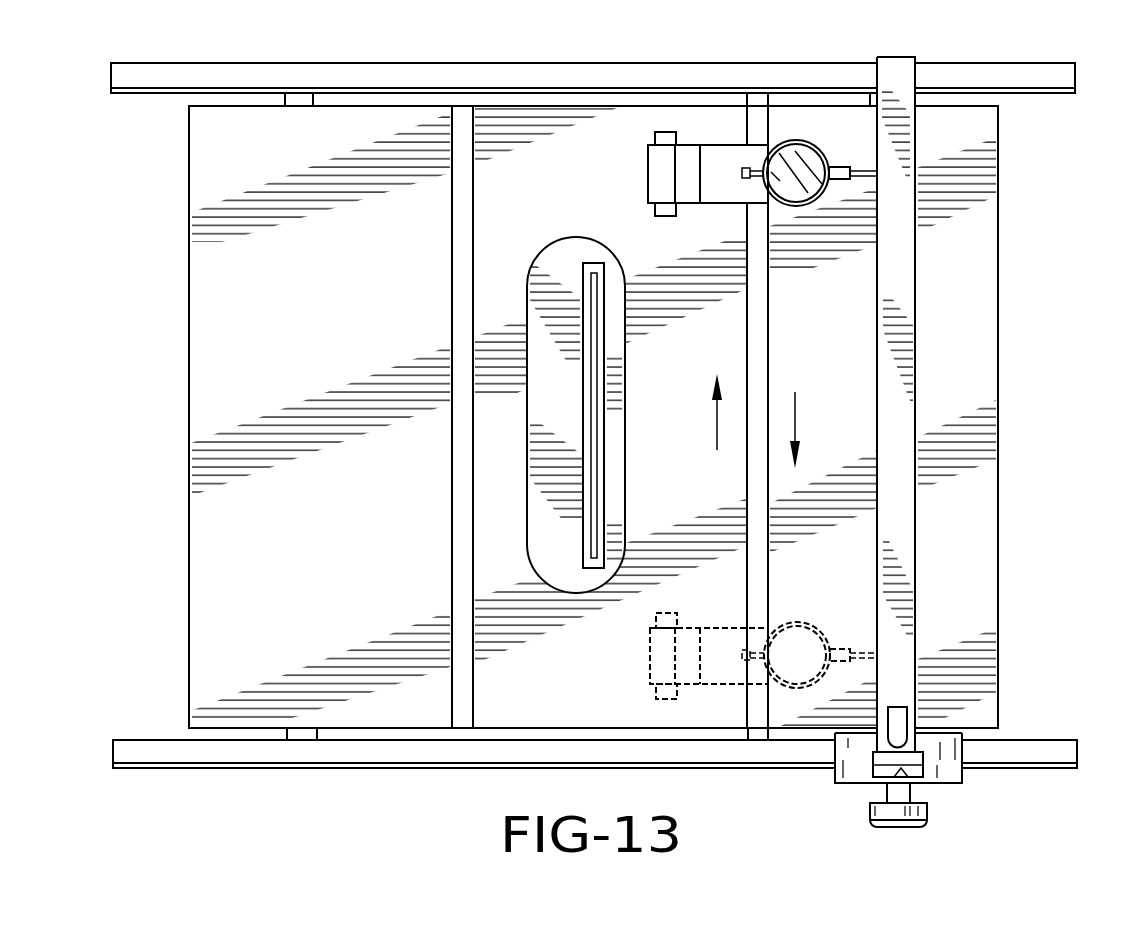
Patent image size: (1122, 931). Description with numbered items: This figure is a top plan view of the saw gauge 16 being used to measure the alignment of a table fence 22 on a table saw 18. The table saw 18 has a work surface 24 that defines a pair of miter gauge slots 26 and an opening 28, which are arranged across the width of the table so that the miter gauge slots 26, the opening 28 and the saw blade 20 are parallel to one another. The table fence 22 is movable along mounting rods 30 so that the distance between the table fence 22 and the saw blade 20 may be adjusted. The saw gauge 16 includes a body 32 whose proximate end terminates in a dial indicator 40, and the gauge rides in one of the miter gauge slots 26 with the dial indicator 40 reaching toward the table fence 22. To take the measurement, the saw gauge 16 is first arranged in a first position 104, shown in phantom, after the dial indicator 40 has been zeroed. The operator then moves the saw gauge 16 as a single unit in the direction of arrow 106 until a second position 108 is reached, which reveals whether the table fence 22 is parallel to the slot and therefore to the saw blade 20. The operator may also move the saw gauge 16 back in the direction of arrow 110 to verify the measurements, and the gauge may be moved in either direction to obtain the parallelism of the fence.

The saw gauge 16 is at (706, 117).
The table saw 18 is at (586, 410).
The saw blade 20 is at (609, 457).
The table fence 22 is at (900, 546).
The work surface 24 is at (968, 267).
The miter gauge slots 26 is at (758, 344).
The opening 28 is at (586, 566).
The mounting rods 30 is at (1032, 72).
The body 32 is at (708, 138).
The dial indicator 40 is at (821, 138).
The first position 104 is at (630, 686).
The arrow 106 is at (717, 421).
The second position 108 is at (628, 193).
The arrow 110 is at (796, 418).